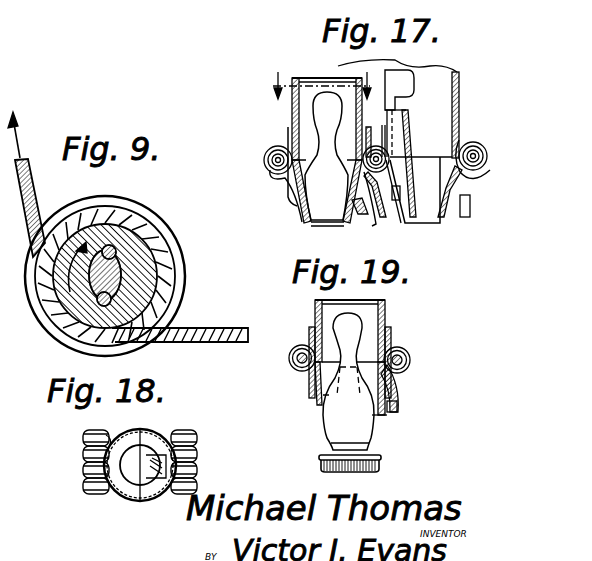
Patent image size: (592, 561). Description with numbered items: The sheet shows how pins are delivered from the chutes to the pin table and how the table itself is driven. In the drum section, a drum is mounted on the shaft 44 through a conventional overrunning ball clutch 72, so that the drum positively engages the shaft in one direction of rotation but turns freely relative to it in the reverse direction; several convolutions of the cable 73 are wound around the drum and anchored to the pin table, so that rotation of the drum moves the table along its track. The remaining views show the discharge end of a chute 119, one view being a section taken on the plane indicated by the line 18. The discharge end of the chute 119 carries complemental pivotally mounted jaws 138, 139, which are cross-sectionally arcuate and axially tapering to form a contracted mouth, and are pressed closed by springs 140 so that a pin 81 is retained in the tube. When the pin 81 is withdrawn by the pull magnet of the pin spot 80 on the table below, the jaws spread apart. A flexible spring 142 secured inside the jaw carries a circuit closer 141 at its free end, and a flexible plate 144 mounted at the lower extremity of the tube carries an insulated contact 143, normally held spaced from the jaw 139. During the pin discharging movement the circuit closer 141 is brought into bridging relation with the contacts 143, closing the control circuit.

In FIG. 9, the shaft 44 is at (110, 282).
In FIG. 9, the overrunning ball clutch 72 is at (109, 247).
In FIG. 9, the cable 73 is at (35, 198).
In FIG. 19, the pin spot 80 is at (383, 462).
In FIG. 17, the pin 81 is at (318, 105).
In FIG. 19, the pin 81 is at (352, 328).
In FIG. 17, the chute 119 is at (343, 81).
In FIG. 18, the chute 119 is at (136, 436).
In FIG. 19, the chute 119 is at (318, 305).
In FIG. 17, the section line 18 is at (325, 86).
In FIG. 17, the jaw 138 is at (288, 196).
In FIG. 18, the jaw 138 is at (128, 488).
In FIG. 19, the jaw 138 is at (311, 408).
In FIG. 17, the jaw 139 is at (359, 210).
In FIG. 18, the jaw 139 is at (148, 442).
In FIG. 19, the jaw 139 is at (400, 379).
In FIG. 17, the spring 140 is at (280, 150).
In FIG. 18, the spring 140 is at (82, 457).
In FIG. 19, the spring 140 is at (297, 348).
In FIG. 17, the circuit closer 141 is at (339, 205).
In FIG. 19, the circuit closer 141 is at (368, 418).
In FIG. 17, the flexible spring 142 is at (443, 178).
In FIG. 18, the flexible spring 142 is at (150, 505).
In FIG. 19, the flexible spring 142 is at (366, 395).
In FIG. 17, the contact 143 is at (456, 198).
In FIG. 19, the contact 143 is at (395, 411).
In FIG. 17, the plate 144 is at (476, 182).
In FIG. 19, the plate 144 is at (402, 393).